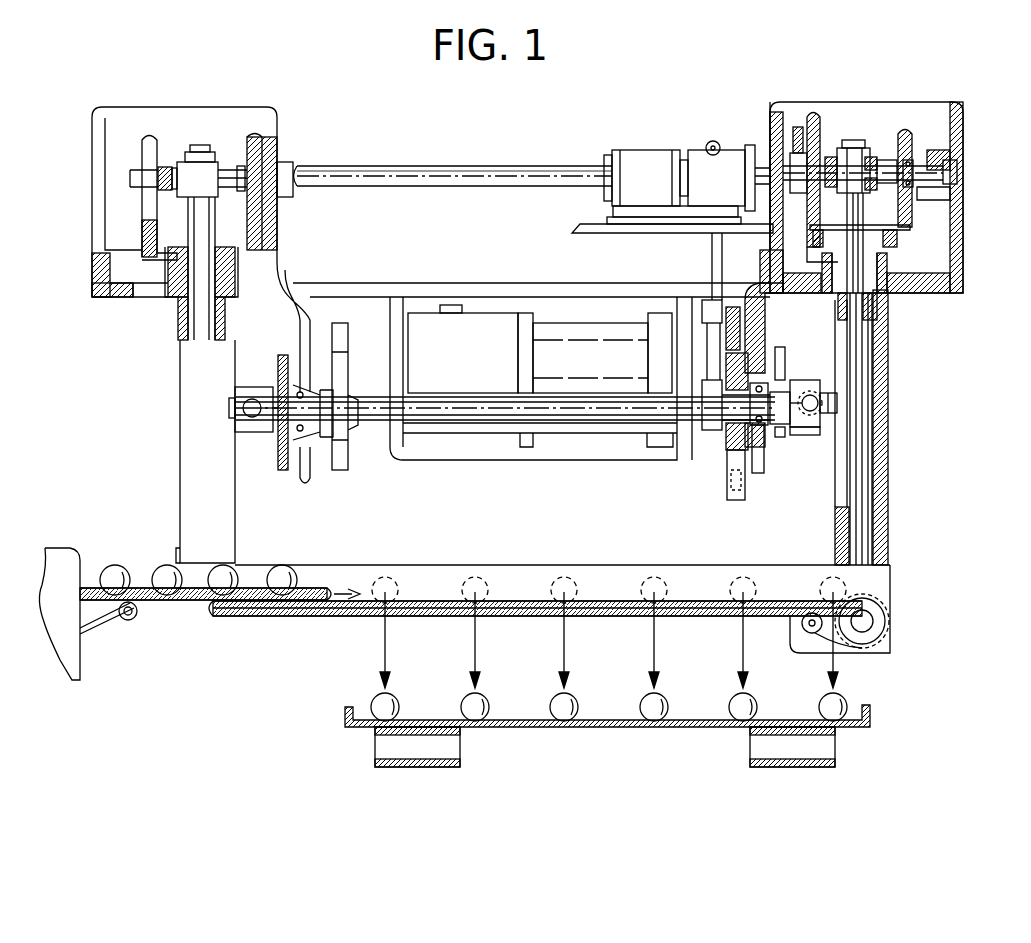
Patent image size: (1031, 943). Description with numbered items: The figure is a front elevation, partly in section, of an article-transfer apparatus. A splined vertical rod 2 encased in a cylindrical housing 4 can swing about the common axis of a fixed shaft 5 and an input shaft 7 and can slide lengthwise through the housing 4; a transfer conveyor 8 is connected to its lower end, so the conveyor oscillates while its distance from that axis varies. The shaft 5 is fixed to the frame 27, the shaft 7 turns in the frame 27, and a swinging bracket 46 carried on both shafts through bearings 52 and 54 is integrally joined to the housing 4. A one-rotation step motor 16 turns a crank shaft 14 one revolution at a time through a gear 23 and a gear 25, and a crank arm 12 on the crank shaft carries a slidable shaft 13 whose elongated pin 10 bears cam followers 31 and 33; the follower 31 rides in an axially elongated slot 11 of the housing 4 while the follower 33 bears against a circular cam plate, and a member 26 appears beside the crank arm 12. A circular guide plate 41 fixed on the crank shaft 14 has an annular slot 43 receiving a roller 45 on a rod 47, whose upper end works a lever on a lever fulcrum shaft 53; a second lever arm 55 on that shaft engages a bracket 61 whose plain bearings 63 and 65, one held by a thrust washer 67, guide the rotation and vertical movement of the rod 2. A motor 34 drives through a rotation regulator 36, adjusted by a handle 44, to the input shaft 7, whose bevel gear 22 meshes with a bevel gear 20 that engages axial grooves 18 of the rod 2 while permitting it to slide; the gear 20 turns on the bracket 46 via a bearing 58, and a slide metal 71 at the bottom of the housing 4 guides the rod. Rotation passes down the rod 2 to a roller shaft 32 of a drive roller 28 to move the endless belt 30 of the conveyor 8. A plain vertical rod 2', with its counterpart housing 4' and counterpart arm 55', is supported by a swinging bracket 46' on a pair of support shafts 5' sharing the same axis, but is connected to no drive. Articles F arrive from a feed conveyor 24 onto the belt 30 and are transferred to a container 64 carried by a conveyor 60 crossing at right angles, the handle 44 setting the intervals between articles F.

The splined vertical rod 2 is at (883, 429).
The vertical rod 2' is at (181, 271).
The cylindrical housing 4 is at (909, 427).
The column 4' is at (180, 451).
The fixed shaft 5 is at (891, 167).
The support shafts 5' is at (206, 152).
The input shaft 7 is at (760, 160).
The transfer conveyor 8 is at (428, 620).
The elongated pin 10 is at (781, 424).
The axially elongated slot 11 is at (838, 502).
The crank arm 12 is at (818, 435).
The shaft 13 is at (812, 395).
The crank shaft 14 is at (460, 420).
The one-rotation step motor 16 is at (541, 378).
The axial grooves 18 is at (863, 212).
The bevel gear 20 is at (897, 240).
The bevel gear 22 is at (813, 110).
The gear 23 is at (337, 323).
The feed conveyor 24 is at (155, 618).
The gear 25 is at (340, 470).
The bracket 26 is at (781, 347).
The frame 27 is at (770, 243).
The drive roller 28 is at (880, 632).
The endless belt 30 is at (865, 598).
The cam follower 31 is at (837, 398).
The roller shaft 32 is at (866, 617).
The cam follower 33 is at (762, 425).
The motor 34 is at (642, 178).
The rotation regulator 36 is at (725, 178).
The guide plate 41 is at (730, 447).
The annular slot 43 is at (731, 490).
The rotation adjustor handle 44 is at (713, 141).
The roller 45 is at (733, 307).
The swinging bracket 46 is at (884, 197).
The swinging bracket 46' is at (182, 249).
The rod 47 is at (712, 258).
The bearing 52 is at (797, 127).
The lever fulcrum shaft 53 is at (470, 166).
The bearing 54 is at (913, 185).
The second lever arm 55 is at (918, 163).
The gear 55' is at (164, 187).
The bearing 58 is at (880, 288).
The conveyor 60 is at (835, 731).
The bracket 61 is at (831, 157).
The plain bearing 63 is at (872, 157).
The container 64 is at (870, 710).
The plain bearing 65 is at (883, 195).
The thrust washer 67 is at (855, 148).
The slide metal 71 is at (888, 522).
The formed articles F is at (116, 568).